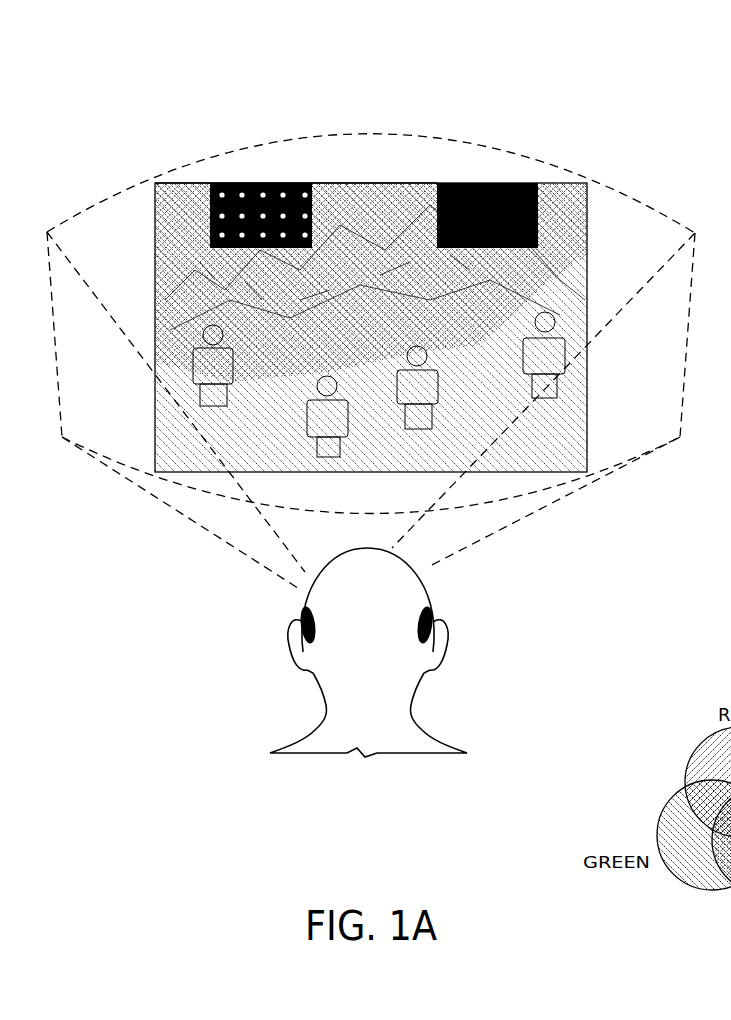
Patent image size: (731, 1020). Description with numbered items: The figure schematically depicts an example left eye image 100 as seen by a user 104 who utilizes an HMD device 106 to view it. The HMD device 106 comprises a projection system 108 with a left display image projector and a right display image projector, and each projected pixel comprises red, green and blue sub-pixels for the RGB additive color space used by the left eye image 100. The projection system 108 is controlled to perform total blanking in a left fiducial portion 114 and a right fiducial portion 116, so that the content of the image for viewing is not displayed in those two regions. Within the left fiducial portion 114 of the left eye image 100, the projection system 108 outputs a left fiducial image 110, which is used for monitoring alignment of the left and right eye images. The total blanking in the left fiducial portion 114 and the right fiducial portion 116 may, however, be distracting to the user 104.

The left eye image 100 is at (588, 297).
The user 104 is at (388, 601).
The HMD device 106 is at (313, 623).
The projection system 108 is at (288, 607).
The left fiducial image 110 is at (227, 173).
The left fiducial portion 114 is at (298, 183).
The right fiducial portion 116 is at (508, 183).